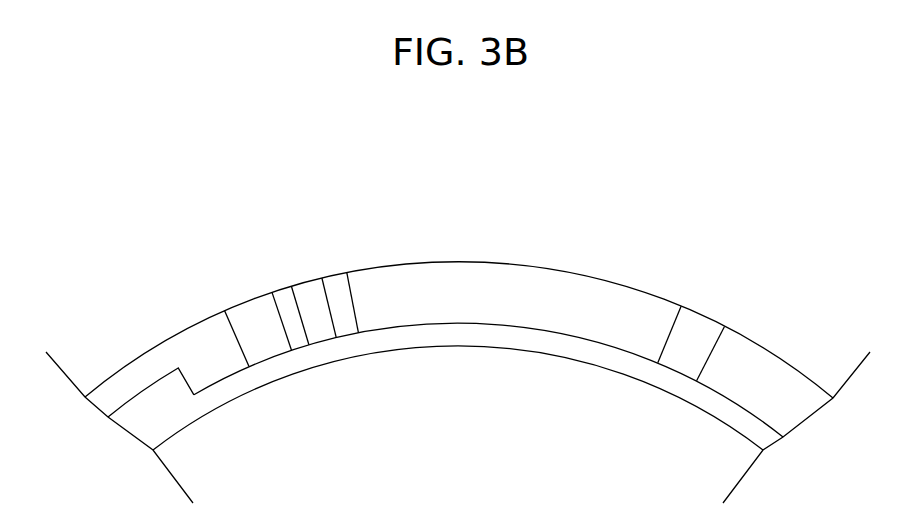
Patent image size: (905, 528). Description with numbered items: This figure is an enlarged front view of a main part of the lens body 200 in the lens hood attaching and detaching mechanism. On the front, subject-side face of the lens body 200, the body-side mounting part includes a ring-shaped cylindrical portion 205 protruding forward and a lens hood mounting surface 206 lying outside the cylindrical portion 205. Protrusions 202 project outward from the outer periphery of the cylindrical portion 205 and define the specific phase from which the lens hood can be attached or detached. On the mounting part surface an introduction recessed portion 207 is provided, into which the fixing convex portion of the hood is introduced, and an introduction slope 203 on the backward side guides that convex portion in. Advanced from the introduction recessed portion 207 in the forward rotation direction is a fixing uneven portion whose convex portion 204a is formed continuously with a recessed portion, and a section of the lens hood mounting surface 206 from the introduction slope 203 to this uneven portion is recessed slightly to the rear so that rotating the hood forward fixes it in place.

The lens body 200 is at (435, 222).
The protrusions 202 is at (153, 395).
The introduction slope 203 is at (693, 325).
The convex portion 204a is at (310, 290).
The cylindrical portion 205 is at (453, 337).
The lens hood mounting surface 206 is at (752, 370).
The introduction recessed portion 207 is at (528, 280).